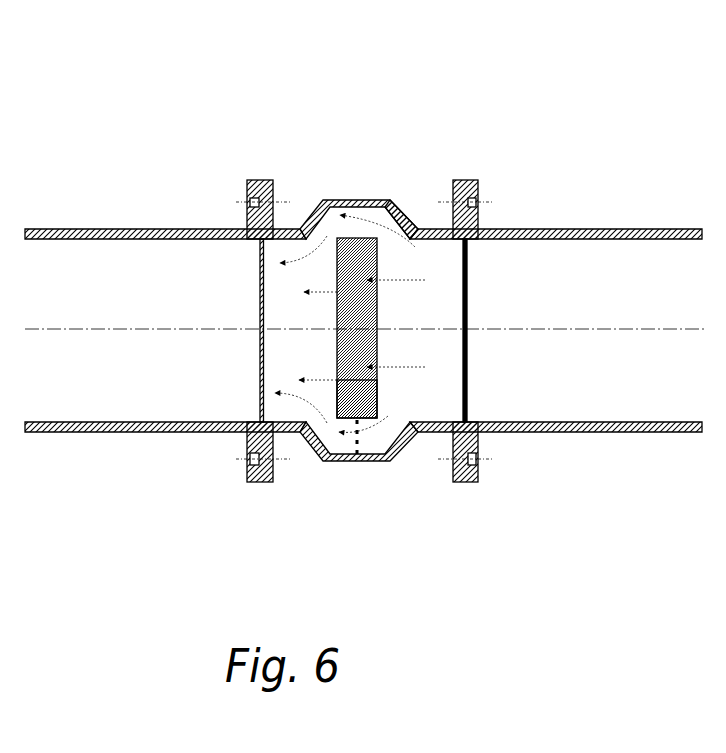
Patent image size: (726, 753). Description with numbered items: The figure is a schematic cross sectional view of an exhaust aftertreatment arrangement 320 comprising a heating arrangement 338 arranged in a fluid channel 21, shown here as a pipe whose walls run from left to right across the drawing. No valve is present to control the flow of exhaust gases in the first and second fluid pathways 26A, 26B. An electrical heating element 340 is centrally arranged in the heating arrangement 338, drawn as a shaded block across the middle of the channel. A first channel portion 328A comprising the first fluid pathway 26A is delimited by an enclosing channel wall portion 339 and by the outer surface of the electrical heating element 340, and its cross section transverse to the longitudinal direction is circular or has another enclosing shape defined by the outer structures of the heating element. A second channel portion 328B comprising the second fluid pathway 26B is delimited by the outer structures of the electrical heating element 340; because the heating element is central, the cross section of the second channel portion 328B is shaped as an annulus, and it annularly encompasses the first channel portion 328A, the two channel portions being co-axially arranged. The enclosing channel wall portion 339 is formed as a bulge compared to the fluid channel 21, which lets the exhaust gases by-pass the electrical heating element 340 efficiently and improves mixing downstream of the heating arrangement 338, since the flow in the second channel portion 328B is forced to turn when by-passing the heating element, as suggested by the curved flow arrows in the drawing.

The fluid channel 21 is at (144, 219).
The exhaust aftertreatment arrangement 320 is at (400, 331).
The heating arrangement 338 is at (417, 525).
The enclosing channel wall portion 339 is at (314, 213).
The electrical heating element 340 is at (353, 255).
The first fluid pathway 26A is at (350, 398).
The second fluid pathway 26B is at (392, 233).
The first channel portion 328A is at (400, 413).
The second channel portion 328B is at (400, 332).